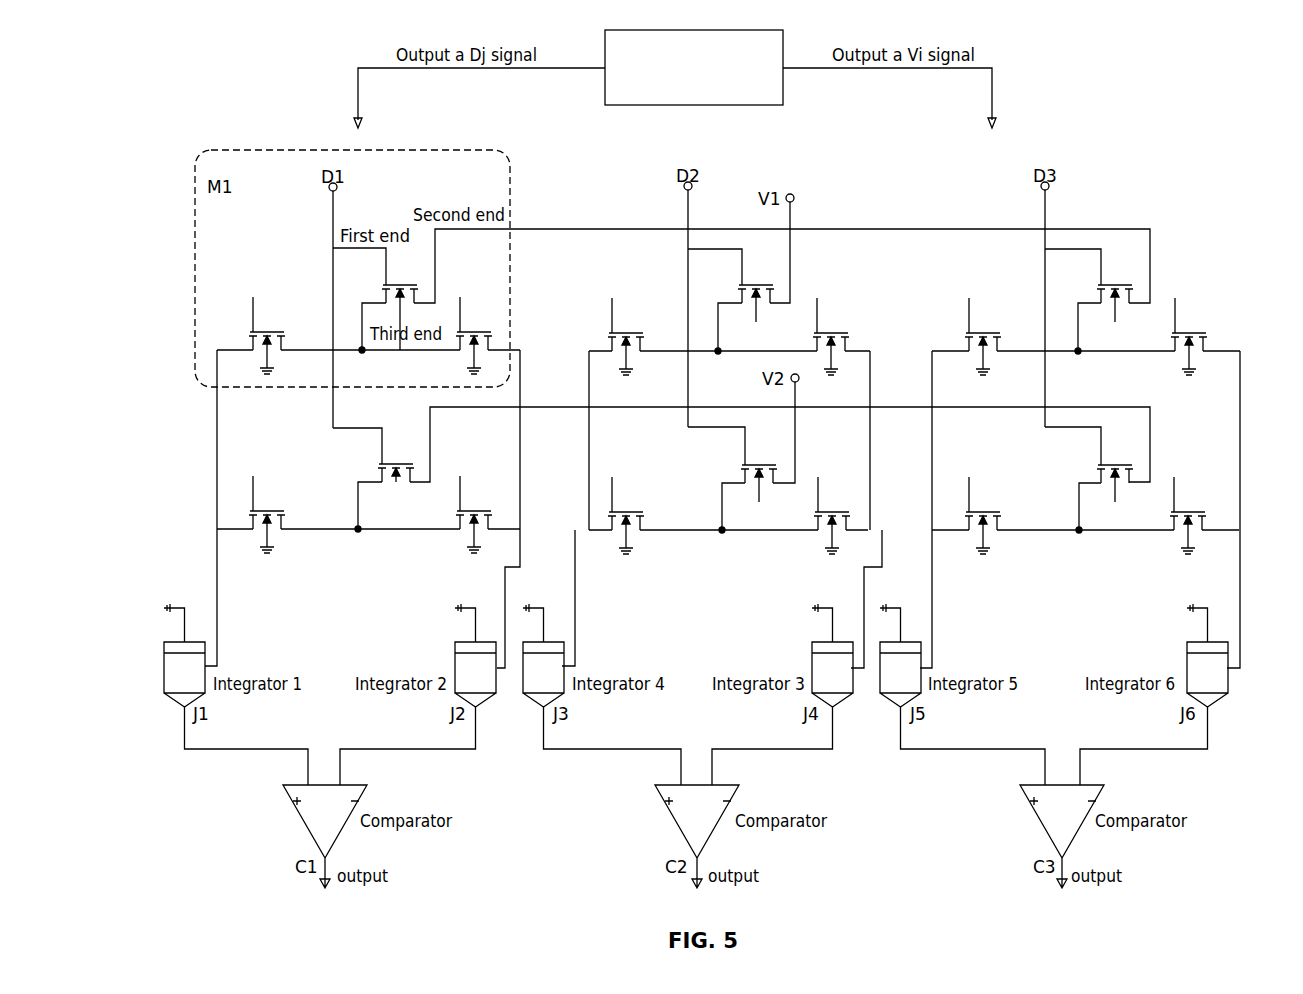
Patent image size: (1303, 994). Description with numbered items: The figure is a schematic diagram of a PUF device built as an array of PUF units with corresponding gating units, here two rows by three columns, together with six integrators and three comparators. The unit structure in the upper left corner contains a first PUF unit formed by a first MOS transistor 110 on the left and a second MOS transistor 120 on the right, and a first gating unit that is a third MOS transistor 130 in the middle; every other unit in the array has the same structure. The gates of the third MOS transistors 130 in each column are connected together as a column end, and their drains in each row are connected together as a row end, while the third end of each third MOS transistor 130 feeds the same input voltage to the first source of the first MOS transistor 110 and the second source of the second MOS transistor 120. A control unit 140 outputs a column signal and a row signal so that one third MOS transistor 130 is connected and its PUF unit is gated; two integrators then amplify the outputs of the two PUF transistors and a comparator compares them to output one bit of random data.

The first MOS transistor 110 is at (264, 324).
The second MOS transistor 120 is at (475, 335).
The third MOS transistor 130 is at (741, 309).
The control unit 140 is at (694, 67).